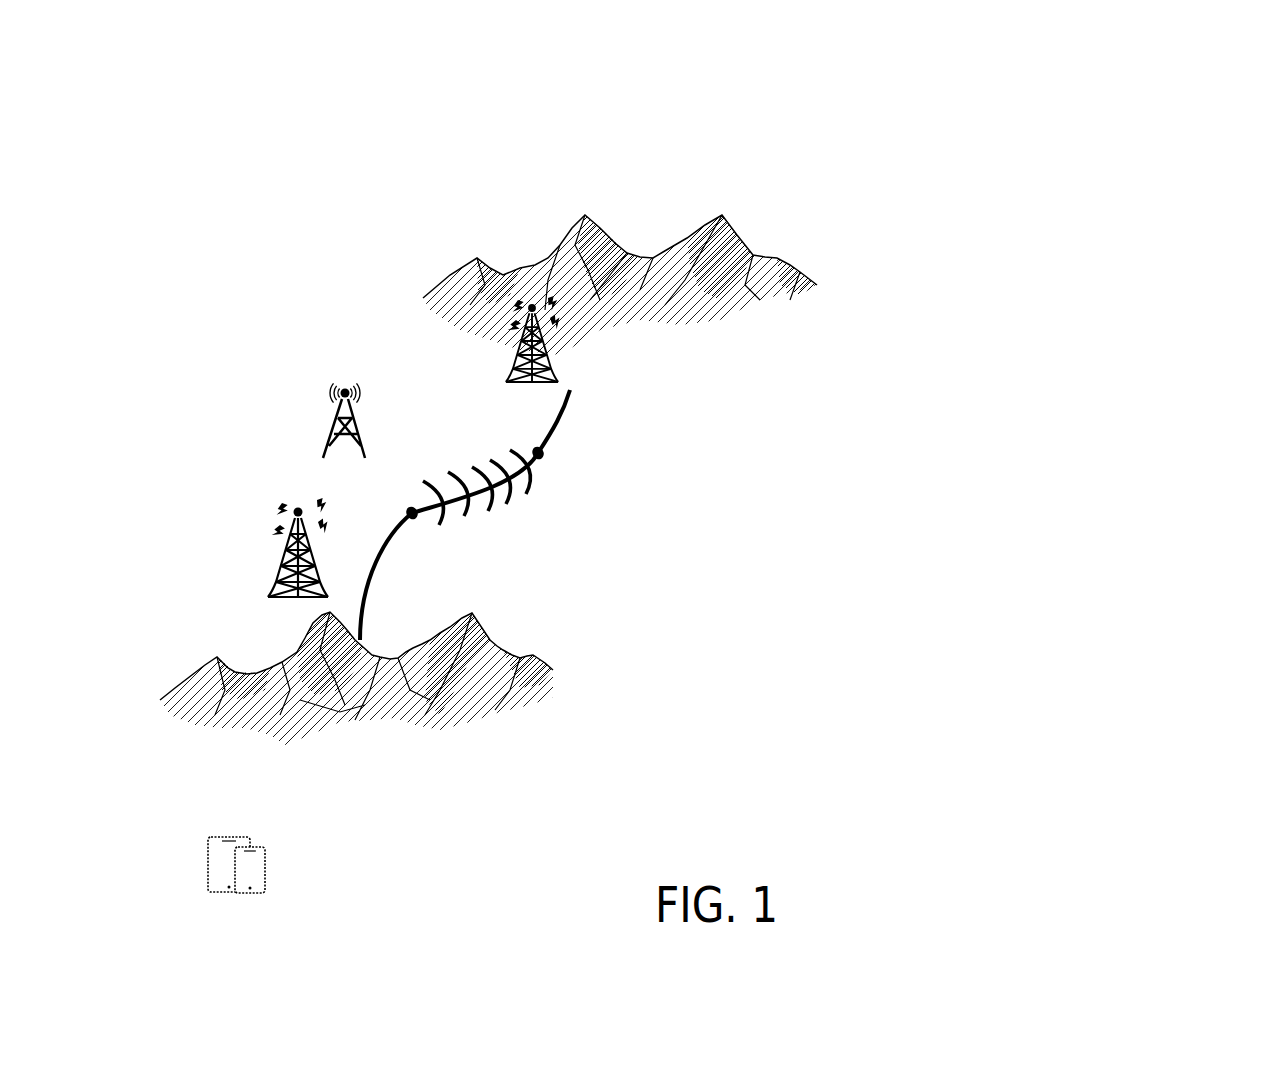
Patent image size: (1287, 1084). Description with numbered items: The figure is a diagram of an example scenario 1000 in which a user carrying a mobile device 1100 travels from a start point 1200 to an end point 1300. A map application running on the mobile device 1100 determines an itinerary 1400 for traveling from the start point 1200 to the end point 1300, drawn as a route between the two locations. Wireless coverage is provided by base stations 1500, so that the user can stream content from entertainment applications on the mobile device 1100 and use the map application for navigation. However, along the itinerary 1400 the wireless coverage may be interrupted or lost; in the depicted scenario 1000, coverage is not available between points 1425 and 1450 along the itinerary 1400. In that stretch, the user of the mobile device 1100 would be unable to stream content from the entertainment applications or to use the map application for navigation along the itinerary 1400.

The scenario 1000 is at (1133, 172).
The mobile device 1100 is at (273, 865).
The start point 1200 is at (387, 623).
The end point 1300 is at (597, 337).
The itinerary 1400 is at (656, 509).
The point 1425 is at (427, 530).
The point 1450 is at (567, 460).
The base stations 1500 is at (252, 533).